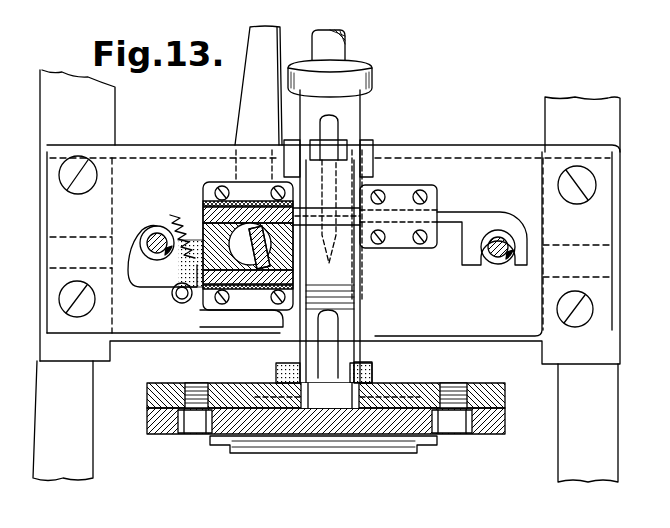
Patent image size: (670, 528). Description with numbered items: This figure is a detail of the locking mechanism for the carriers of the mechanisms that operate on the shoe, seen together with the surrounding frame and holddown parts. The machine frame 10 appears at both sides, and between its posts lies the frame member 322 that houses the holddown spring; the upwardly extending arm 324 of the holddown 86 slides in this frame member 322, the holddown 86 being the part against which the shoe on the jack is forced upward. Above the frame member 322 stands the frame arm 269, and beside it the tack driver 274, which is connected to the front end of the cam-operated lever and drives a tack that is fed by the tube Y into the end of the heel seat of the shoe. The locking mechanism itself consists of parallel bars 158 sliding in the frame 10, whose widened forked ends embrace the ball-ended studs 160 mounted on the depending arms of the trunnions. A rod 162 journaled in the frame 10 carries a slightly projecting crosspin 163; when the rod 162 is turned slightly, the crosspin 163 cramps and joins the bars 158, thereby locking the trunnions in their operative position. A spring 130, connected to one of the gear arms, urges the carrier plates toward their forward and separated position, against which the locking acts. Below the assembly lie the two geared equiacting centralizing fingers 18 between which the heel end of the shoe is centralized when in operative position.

The machine frame 10 is at (115, 113).
The frame arm 269 is at (240, 121).
The tack driver 274 is at (350, 54).
The tube Y is at (342, 128).
The upwardly extending arm 324 is at (355, 133).
The frame member 322 is at (463, 146).
The parallel bars 158 is at (477, 212).
The crosspin 163 is at (203, 220).
The spring 130 is at (173, 227).
The ball-ended studs 160 is at (157, 230).
The rod 162 is at (222, 272).
The holddown 86 is at (333, 358).
The centralizing fingers 18 is at (357, 430).